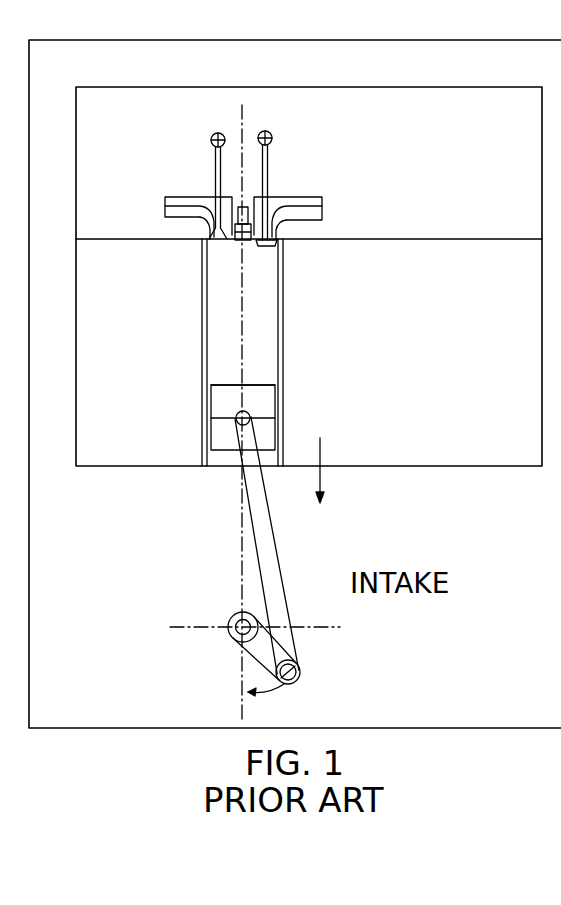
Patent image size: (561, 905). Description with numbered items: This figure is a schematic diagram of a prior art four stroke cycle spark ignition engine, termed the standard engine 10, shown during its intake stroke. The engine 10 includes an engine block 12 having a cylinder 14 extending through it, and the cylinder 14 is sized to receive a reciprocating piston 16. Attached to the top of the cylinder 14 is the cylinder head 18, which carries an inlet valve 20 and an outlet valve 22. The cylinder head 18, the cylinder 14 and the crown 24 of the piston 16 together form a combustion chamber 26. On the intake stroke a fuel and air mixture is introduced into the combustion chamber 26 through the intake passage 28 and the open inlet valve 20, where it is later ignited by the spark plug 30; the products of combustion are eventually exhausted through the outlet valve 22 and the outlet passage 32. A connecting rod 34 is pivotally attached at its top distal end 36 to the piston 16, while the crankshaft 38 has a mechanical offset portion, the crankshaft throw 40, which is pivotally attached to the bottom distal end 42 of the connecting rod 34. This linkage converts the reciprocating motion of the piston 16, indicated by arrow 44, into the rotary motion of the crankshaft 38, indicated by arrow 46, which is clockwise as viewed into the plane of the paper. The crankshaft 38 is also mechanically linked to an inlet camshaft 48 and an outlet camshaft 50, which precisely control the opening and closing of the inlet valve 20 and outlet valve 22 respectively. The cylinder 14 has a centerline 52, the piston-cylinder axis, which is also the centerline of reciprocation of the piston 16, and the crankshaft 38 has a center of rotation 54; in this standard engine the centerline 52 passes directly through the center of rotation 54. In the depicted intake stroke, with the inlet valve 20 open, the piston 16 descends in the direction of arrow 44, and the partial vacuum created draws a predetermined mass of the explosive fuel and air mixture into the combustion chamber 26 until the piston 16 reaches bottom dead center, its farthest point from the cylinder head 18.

The standard engine 10 is at (560, 655).
The engine block 12 is at (408, 468).
The cylinder 14 is at (283, 352).
The piston 16 is at (223, 400).
The cylinder head 18 is at (430, 241).
The inlet valve 20 is at (270, 165).
The outlet valve 22 is at (214, 178).
The crown 24 is at (258, 386).
The combustion chamber 26 is at (228, 291).
The intake passage 28 is at (322, 212).
The spark plug 30 is at (247, 212).
The outlet passage 32 is at (165, 208).
The connecting rod 34 is at (258, 505).
The top distal end 36 is at (250, 414).
The crankshaft 38 is at (237, 614).
The crankshaft throw 40 is at (252, 662).
The bottom distal end 42 is at (300, 677).
The arrow indicating reciprocating motion 44 is at (322, 458).
The arrow indicating rotary motion 46 is at (307, 627).
The inlet camshaft 48 is at (272, 137).
The outlet camshaft 50 is at (209, 141).
The centerline 52 is at (245, 311).
The center of rotation 54 is at (232, 640).